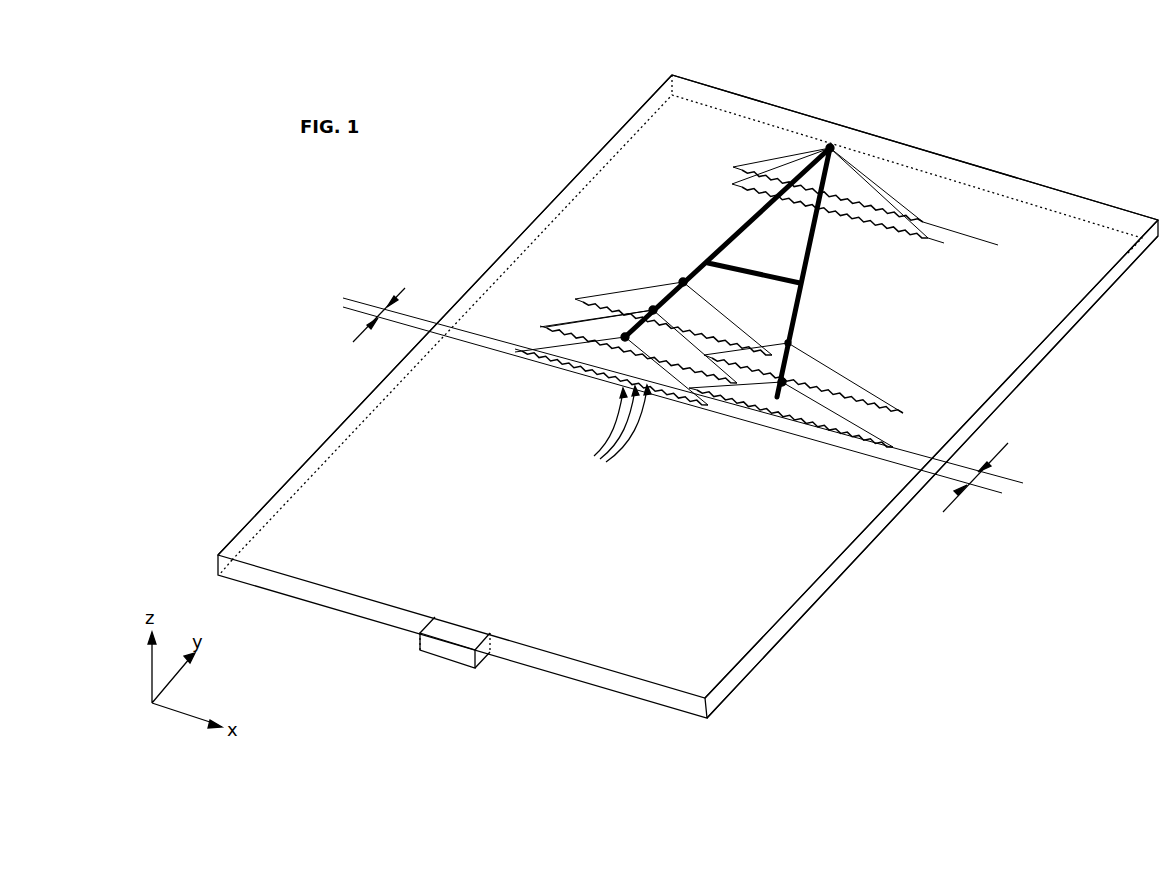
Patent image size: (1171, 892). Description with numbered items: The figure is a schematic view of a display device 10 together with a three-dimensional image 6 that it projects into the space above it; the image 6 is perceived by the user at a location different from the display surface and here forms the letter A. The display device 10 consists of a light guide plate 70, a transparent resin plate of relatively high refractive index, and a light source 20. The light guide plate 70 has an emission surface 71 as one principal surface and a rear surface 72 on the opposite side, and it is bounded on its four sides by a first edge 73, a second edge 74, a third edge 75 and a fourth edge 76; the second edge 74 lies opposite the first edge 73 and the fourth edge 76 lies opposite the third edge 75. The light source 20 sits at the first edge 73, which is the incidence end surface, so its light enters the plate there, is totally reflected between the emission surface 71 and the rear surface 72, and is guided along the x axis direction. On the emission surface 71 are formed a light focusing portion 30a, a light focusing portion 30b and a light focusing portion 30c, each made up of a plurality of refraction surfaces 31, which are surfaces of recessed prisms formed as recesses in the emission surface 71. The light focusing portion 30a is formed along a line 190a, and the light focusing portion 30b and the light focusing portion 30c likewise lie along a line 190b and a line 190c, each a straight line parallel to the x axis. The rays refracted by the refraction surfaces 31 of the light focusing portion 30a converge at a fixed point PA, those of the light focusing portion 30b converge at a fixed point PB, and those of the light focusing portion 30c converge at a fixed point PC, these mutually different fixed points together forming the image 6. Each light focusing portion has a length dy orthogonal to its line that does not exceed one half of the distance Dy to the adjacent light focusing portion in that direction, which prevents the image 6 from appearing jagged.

The display device 10 is at (1164, 55).
The light source 20 is at (420, 652).
The three-dimensional image 6 is at (807, 268).
The light focusing portion 30a is at (580, 376).
The light focusing portion 30b is at (800, 431).
The light focusing portion 30c is at (930, 216).
The refraction surfaces 31 is at (613, 433).
The light guide plate 70 is at (1097, 203).
The emission surface 71 is at (1085, 288).
The rear surface 72 is at (1028, 384).
The first edge 73 is at (350, 608).
The second edge 74 is at (777, 110).
The third edge 75 is at (297, 482).
The fourth edge 76 is at (807, 605).
The line 190a is at (702, 413).
The line 190b is at (710, 396).
The line 190c is at (773, 278).
The fixed point PA is at (615, 337).
The fixed point PB is at (783, 382).
The fixed point PC is at (830, 148).
The length dy is at (382, 312).
The distance Dy is at (973, 480).